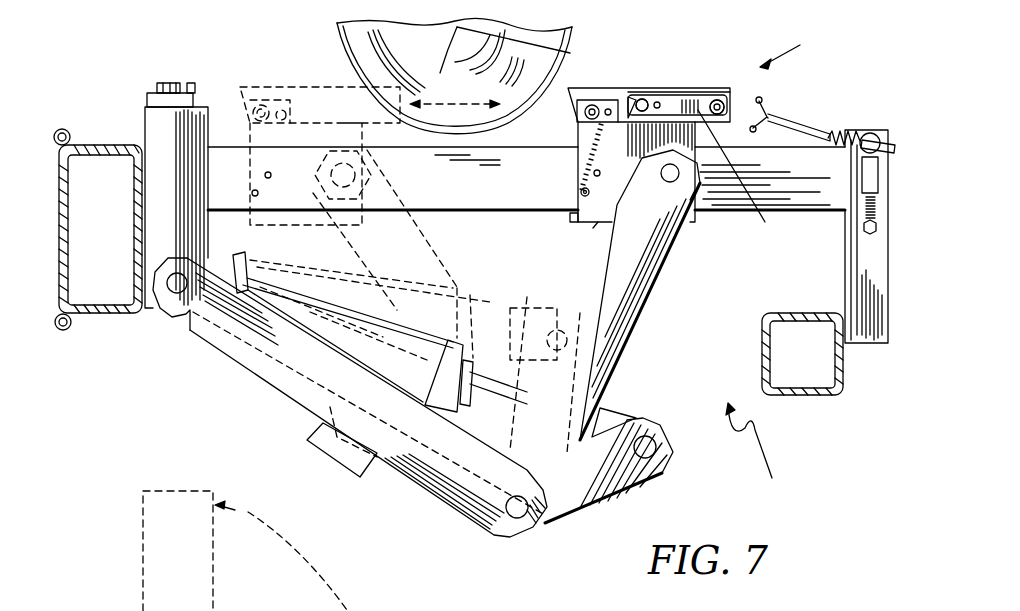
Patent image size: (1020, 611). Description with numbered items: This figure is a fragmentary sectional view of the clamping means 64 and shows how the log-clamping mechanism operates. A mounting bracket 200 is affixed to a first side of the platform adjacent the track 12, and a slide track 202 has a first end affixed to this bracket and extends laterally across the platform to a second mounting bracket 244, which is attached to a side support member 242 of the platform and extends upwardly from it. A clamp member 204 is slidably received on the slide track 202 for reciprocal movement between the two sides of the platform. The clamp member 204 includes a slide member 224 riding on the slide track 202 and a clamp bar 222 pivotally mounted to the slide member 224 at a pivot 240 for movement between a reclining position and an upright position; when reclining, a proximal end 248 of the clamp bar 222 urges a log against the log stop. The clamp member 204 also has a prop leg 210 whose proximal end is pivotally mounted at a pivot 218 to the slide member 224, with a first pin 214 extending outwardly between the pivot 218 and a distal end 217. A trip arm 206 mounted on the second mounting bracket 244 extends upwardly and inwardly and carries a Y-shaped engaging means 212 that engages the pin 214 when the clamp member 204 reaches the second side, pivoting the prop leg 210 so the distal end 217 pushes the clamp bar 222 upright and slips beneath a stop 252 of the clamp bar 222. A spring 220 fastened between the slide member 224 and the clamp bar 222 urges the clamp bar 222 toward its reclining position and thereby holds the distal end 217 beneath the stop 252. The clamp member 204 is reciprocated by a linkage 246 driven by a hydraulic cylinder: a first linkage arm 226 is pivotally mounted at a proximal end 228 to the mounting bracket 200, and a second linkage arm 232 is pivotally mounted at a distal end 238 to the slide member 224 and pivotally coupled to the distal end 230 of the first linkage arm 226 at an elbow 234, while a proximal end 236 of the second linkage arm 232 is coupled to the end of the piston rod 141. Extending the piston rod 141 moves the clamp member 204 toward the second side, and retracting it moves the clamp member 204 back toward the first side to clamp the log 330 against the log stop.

The track 12 is at (97, 313).
The clamping means 64 is at (761, 448).
The piston rod 141 is at (606, 416).
The mounting bracket 200 is at (145, 130).
The slide track 202 is at (468, 188).
The clamp member 204 is at (797, 48).
The trip arm 206 is at (808, 123).
The prop leg 210 is at (747, 176).
The Y-shaped engaging means 212 is at (768, 103).
The first pin 214 is at (667, 100).
The distal end 217 is at (715, 102).
The pivot 218 is at (648, 100).
The spring 220 is at (588, 155).
The clamp bar 222 is at (612, 86).
The slide member 224 is at (593, 228).
The first linkage arm 226 is at (288, 392).
The proximal end 228 is at (170, 305).
The distal end 230 is at (498, 532).
The second linkage arm 232 is at (615, 322).
The elbow 234 is at (550, 522).
The proximal end 236 is at (673, 463).
The distal end 238 is at (702, 205).
The pivot 240 is at (591, 104).
The side support member 242 is at (822, 398).
The mounting bracket 244 is at (852, 270).
The linkage 246 is at (424, 492).
The proximal end 248 is at (568, 92).
The stop 252 is at (333, 585).
The log 330 is at (362, 45).